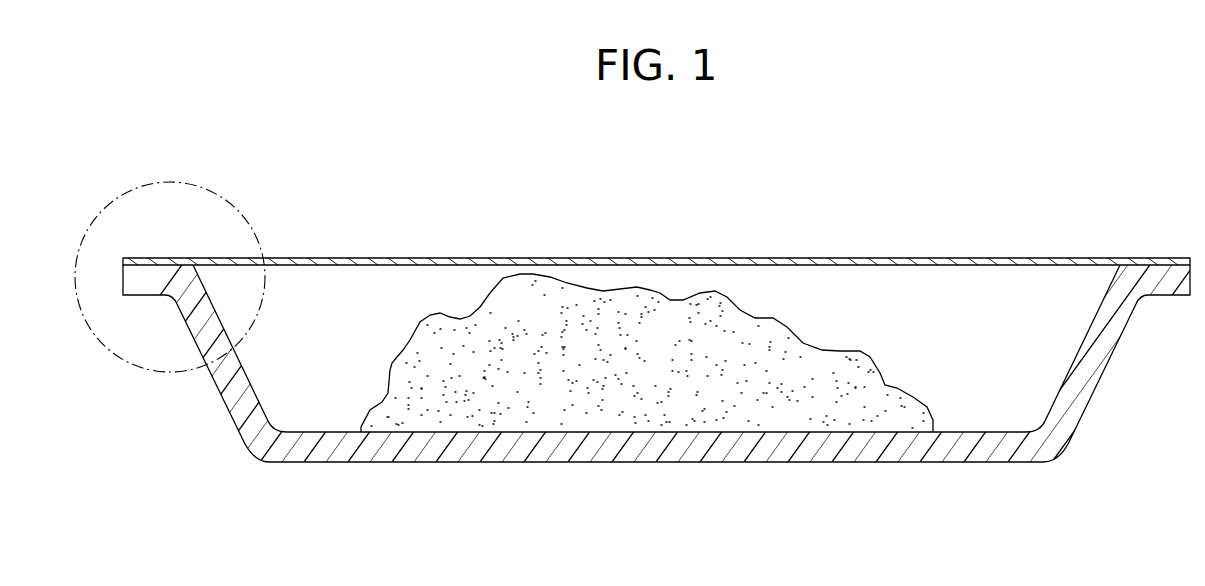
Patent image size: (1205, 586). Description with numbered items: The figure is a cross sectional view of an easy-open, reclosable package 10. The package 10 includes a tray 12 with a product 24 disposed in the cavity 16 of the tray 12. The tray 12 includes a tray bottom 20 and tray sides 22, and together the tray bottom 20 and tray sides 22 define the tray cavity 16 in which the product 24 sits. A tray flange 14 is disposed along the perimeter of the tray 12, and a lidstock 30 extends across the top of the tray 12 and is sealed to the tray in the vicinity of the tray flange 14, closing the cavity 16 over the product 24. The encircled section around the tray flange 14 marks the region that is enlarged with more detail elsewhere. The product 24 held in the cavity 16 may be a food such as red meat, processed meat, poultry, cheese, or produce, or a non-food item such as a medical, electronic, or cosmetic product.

The package 10 is at (626, 192).
The tray 12 is at (741, 474).
The tray flange 14 is at (145, 311).
The cavity 16 is at (327, 330).
The tray bottom 20 is at (599, 463).
The tray sides 22 is at (1116, 345).
The product 24 is at (866, 368).
The lidstock 30 is at (711, 257).